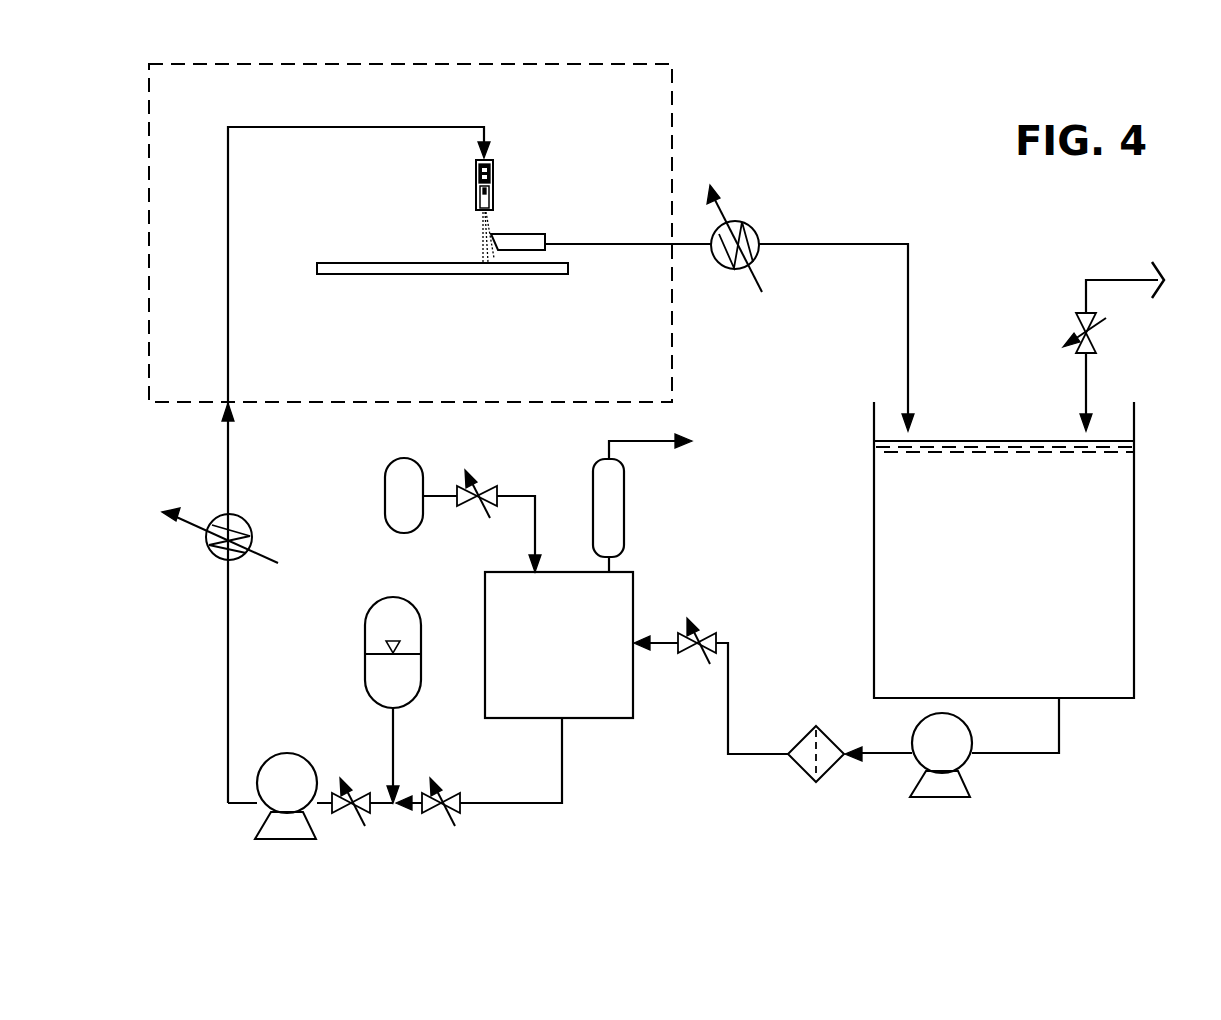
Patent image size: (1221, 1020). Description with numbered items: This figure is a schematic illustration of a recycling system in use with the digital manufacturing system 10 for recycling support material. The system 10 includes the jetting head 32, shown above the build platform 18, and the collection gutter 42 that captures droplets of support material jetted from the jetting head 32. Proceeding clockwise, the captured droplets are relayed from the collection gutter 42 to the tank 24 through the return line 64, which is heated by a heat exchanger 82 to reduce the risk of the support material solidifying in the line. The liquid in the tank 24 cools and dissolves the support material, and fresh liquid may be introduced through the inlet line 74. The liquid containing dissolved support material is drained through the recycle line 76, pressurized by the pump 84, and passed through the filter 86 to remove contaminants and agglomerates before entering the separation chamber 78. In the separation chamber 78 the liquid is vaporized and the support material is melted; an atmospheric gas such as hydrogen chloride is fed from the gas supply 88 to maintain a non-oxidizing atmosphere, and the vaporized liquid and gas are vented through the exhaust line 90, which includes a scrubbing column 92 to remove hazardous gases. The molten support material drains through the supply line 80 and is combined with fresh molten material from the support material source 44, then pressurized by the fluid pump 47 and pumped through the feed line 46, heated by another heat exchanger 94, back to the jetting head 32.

The system 10 is at (683, 122).
The build platform 18 is at (383, 275).
The tank 24 is at (1134, 518).
The jetting head 32 is at (476, 172).
The collection gutter 42 is at (522, 234).
The support material source 44 is at (365, 620).
The feed line 46 is at (228, 258).
The fluid pump 47 is at (282, 754).
The return line 64 is at (605, 248).
The inlet line 74 is at (1125, 280).
The recycle line 76 is at (1078, 753).
The separation chamber 78 is at (633, 705).
The supply line 80 is at (562, 758).
The heat exchanger 82 is at (722, 258).
The pump 84 is at (960, 790).
The filter 86 is at (792, 760).
The gas supply 88 is at (385, 478).
The exhaust line 90 is at (648, 441).
The column 92 is at (624, 505).
The heat exchanger 94 is at (244, 519).